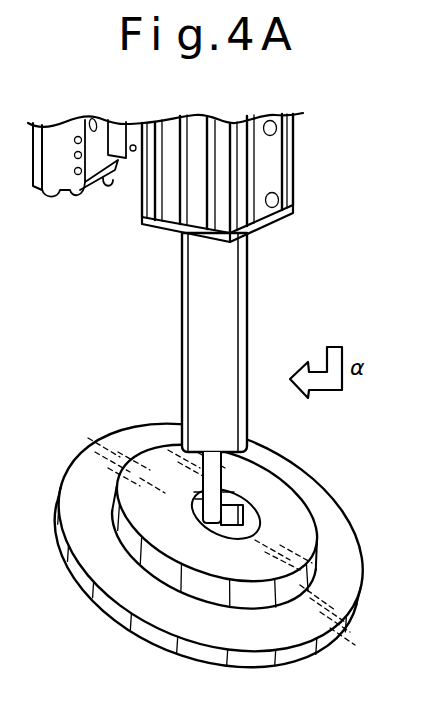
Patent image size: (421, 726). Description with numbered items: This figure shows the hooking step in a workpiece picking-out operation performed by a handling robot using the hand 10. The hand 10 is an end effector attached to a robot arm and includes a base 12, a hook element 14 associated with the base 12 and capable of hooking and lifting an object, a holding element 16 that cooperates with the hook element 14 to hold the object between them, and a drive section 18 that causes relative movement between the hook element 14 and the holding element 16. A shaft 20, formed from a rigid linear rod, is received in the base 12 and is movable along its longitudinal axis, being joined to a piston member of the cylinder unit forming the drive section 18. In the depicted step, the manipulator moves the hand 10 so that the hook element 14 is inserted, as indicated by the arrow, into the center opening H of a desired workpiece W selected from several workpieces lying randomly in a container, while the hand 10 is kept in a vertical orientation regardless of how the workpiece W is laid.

The hand 10 is at (173, 289).
The base 12 is at (202, 345).
The hook element 14 is at (258, 527).
The holding element 16 is at (253, 458).
The drive section 18 is at (267, 179).
The shaft 20 is at (262, 487).
The workpiece W is at (108, 547).
The center opening H is at (200, 622).